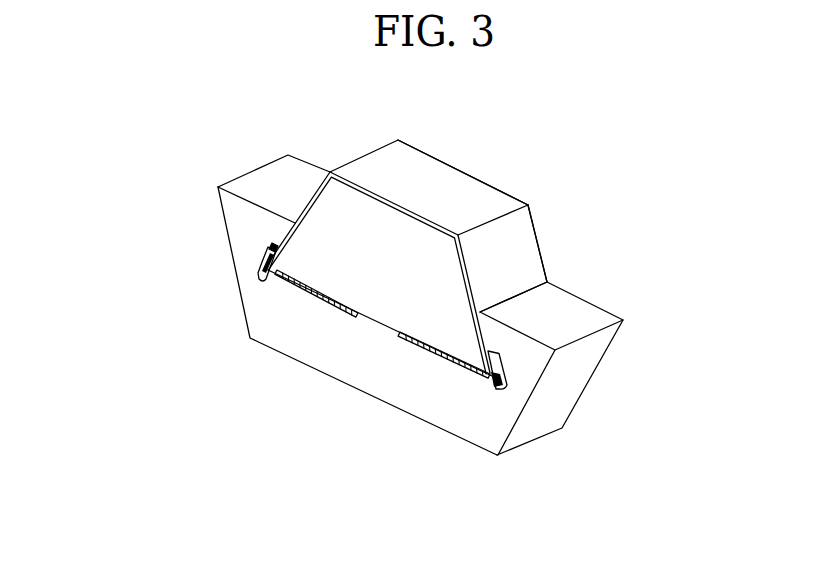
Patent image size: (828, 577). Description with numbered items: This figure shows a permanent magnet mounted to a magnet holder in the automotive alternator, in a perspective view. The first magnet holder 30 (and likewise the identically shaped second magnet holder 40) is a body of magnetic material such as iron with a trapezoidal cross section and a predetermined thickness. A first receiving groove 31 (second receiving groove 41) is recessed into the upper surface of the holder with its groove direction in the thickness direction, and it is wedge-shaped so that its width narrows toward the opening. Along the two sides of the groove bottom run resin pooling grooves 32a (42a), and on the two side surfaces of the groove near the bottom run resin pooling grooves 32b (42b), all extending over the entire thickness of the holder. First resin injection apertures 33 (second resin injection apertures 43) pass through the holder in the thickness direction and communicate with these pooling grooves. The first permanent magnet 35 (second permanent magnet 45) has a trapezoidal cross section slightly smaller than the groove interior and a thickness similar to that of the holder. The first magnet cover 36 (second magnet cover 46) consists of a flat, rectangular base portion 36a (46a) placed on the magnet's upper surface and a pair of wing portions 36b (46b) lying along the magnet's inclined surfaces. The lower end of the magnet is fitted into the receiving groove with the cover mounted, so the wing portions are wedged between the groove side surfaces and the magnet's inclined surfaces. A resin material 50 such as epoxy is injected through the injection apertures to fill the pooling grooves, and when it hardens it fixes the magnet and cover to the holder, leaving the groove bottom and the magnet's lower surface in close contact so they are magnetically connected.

The first magnet holder 30 is at (475, 305).
The second magnet holder 40 is at (602, 305).
The first receiving groove 31 is at (487, 323).
The second receiving groove 41 is at (483, 331).
The resin pooling grooves 32a is at (336, 336).
The resin pooling grooves 42a is at (312, 292).
The resin pooling grooves 32b is at (196, 235).
The resin pooling grooves 42b is at (272, 252).
The first resin injection apertures 33 is at (210, 280).
The second resin injection apertures 43 is at (262, 275).
The first permanent magnet 35 is at (387, 236).
The second permanent magnet 45 is at (392, 245).
The first magnet cover 36 is at (510, 219).
The second magnet cover 46 is at (510, 219).
The base portion 36a is at (534, 172).
The base portion 46a is at (497, 197).
The wing portions 36b is at (606, 238).
The wing portions 46b is at (522, 245).
The resin material 50 is at (498, 390).